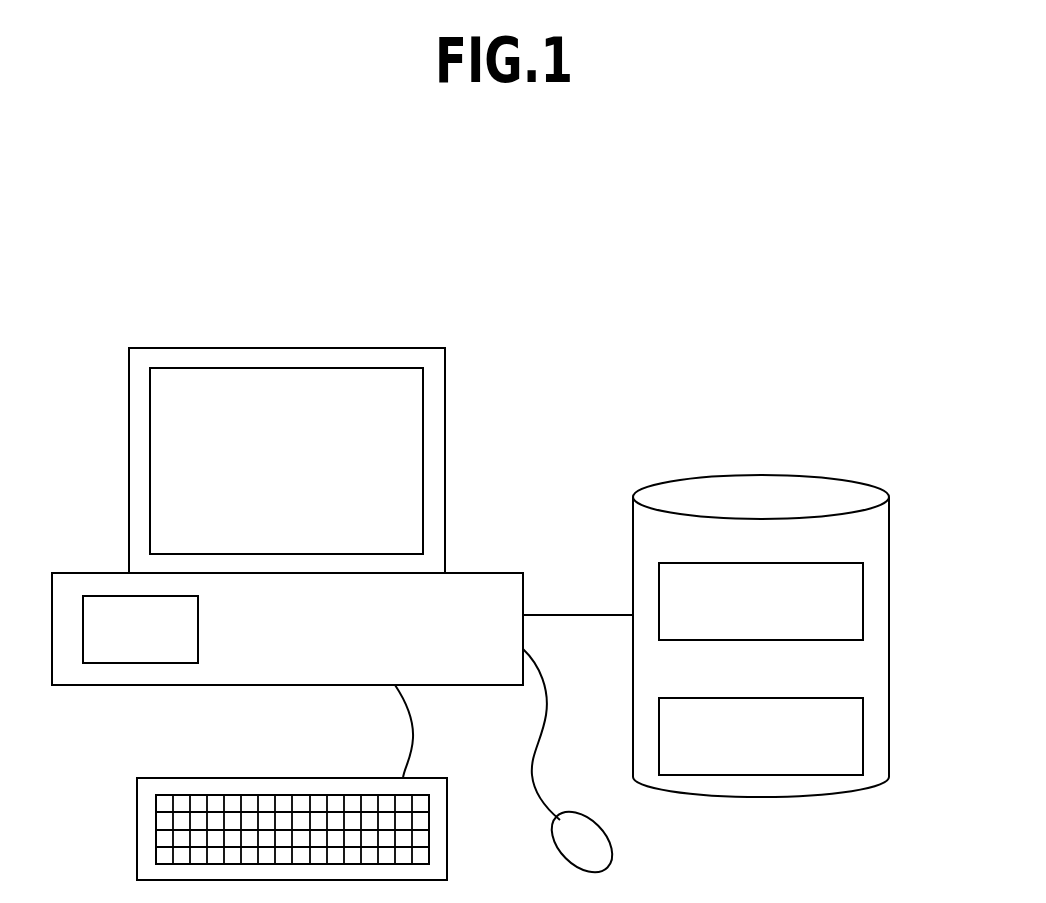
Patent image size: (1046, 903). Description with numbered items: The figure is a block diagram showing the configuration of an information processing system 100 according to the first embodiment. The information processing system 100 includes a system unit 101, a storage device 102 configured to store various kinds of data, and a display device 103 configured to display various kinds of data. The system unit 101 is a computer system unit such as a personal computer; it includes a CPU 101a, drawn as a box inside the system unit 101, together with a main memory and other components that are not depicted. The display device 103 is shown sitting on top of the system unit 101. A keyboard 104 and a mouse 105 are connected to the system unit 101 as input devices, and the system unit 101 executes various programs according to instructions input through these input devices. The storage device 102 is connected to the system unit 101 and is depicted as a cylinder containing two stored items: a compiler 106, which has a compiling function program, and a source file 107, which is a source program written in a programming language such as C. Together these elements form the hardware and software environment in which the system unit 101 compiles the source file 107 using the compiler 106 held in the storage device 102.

The information processing system 100 is at (559, 339).
The system unit 101 is at (523, 585).
The CPU 101a is at (198, 643).
The storage device 102 is at (889, 558).
The display device 103 is at (445, 458).
The keyboard 104 is at (447, 862).
The mouse 105 is at (648, 830).
The compiler 106 is at (816, 562).
The source file 107 is at (816, 697).